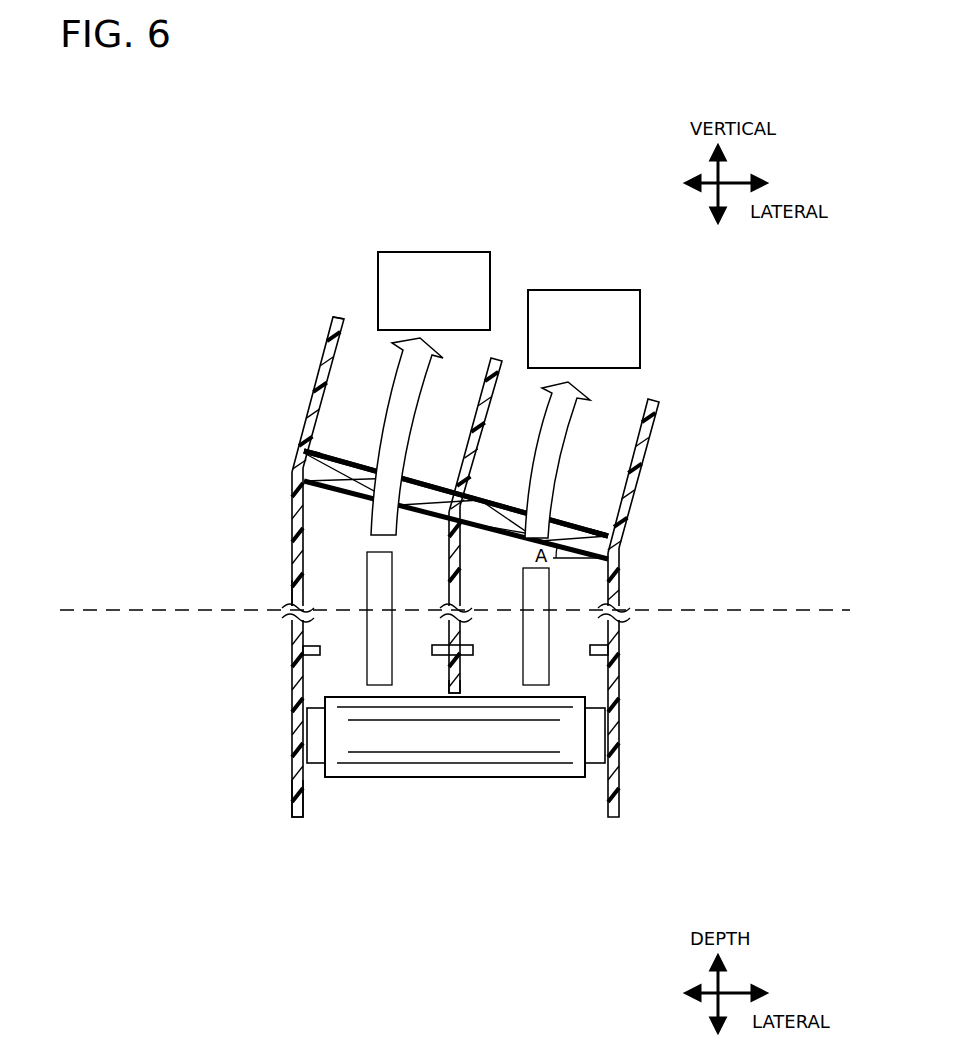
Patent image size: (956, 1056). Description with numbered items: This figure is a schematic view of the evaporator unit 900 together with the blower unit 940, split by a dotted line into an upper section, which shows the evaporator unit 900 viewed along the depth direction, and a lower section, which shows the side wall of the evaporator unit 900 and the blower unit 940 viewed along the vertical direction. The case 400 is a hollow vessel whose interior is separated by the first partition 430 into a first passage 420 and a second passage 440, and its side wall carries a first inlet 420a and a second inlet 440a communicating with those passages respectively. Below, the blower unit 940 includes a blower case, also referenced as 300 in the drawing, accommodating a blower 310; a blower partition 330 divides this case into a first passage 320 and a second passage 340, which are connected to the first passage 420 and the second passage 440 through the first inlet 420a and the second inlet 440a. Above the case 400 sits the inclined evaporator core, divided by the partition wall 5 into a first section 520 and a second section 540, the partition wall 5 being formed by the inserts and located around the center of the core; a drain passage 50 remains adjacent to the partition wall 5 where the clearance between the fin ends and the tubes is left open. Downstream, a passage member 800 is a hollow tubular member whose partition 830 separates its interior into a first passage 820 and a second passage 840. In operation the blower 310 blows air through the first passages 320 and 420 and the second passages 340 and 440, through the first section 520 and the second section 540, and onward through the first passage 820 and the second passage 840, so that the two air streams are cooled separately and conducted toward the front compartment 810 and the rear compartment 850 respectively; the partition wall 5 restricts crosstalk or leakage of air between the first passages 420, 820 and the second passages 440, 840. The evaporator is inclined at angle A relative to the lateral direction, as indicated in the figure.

The partition wall 5 is at (482, 486).
The drain passage 50 is at (460, 518).
The base unit 300 is at (296, 800).
The blower 310 is at (325, 768).
The first passage 320 is at (350, 672).
The blower partition 330 is at (462, 686).
The second passage 340 is at (562, 672).
The case 400 is at (296, 604).
The first passage 420 is at (340, 580).
The first inlet 420a is at (340, 656).
The first partition 430 is at (450, 530).
The second passage 440 is at (600, 584).
The second inlet 440a is at (573, 652).
The first section 520 is at (298, 460).
The second section 540 is at (619, 539).
The passage member 800 is at (333, 331).
The front compartment 810 is at (430, 393).
The first passage 820 is at (345, 418).
The partition 830 is at (490, 407).
The second passage 840 is at (622, 475).
The rear compartment 850 is at (582, 414).
The evaporator unit 900 is at (710, 383).
The blower unit 940 is at (280, 727).